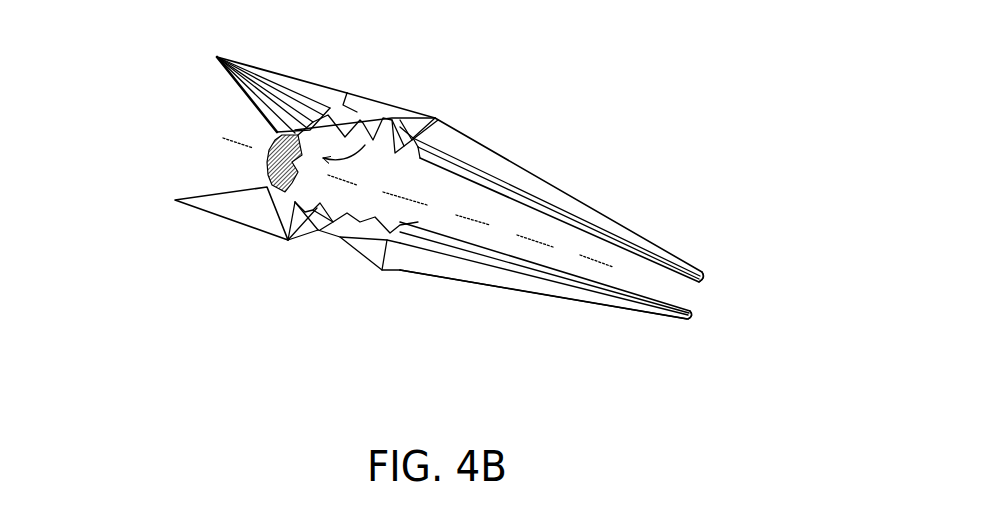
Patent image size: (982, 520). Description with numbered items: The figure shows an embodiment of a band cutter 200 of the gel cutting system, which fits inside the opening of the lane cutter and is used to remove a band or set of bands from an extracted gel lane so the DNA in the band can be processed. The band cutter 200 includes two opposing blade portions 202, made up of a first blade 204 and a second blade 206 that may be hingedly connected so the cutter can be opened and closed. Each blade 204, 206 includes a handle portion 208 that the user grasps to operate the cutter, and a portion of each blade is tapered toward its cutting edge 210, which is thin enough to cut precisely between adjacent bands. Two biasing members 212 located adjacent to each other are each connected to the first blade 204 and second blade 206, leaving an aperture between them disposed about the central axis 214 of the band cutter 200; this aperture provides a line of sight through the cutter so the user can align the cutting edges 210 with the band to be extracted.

The band cutter 200 is at (684, 148).
The opposing blade portions 202 is at (719, 333).
The first blade 204 is at (660, 247).
The second blade 206 is at (632, 314).
The handle portion 208 is at (192, 77).
The cutting edge 210 is at (721, 285).
The biasing members 212 is at (377, 120).
The central axis 214 is at (480, 215).